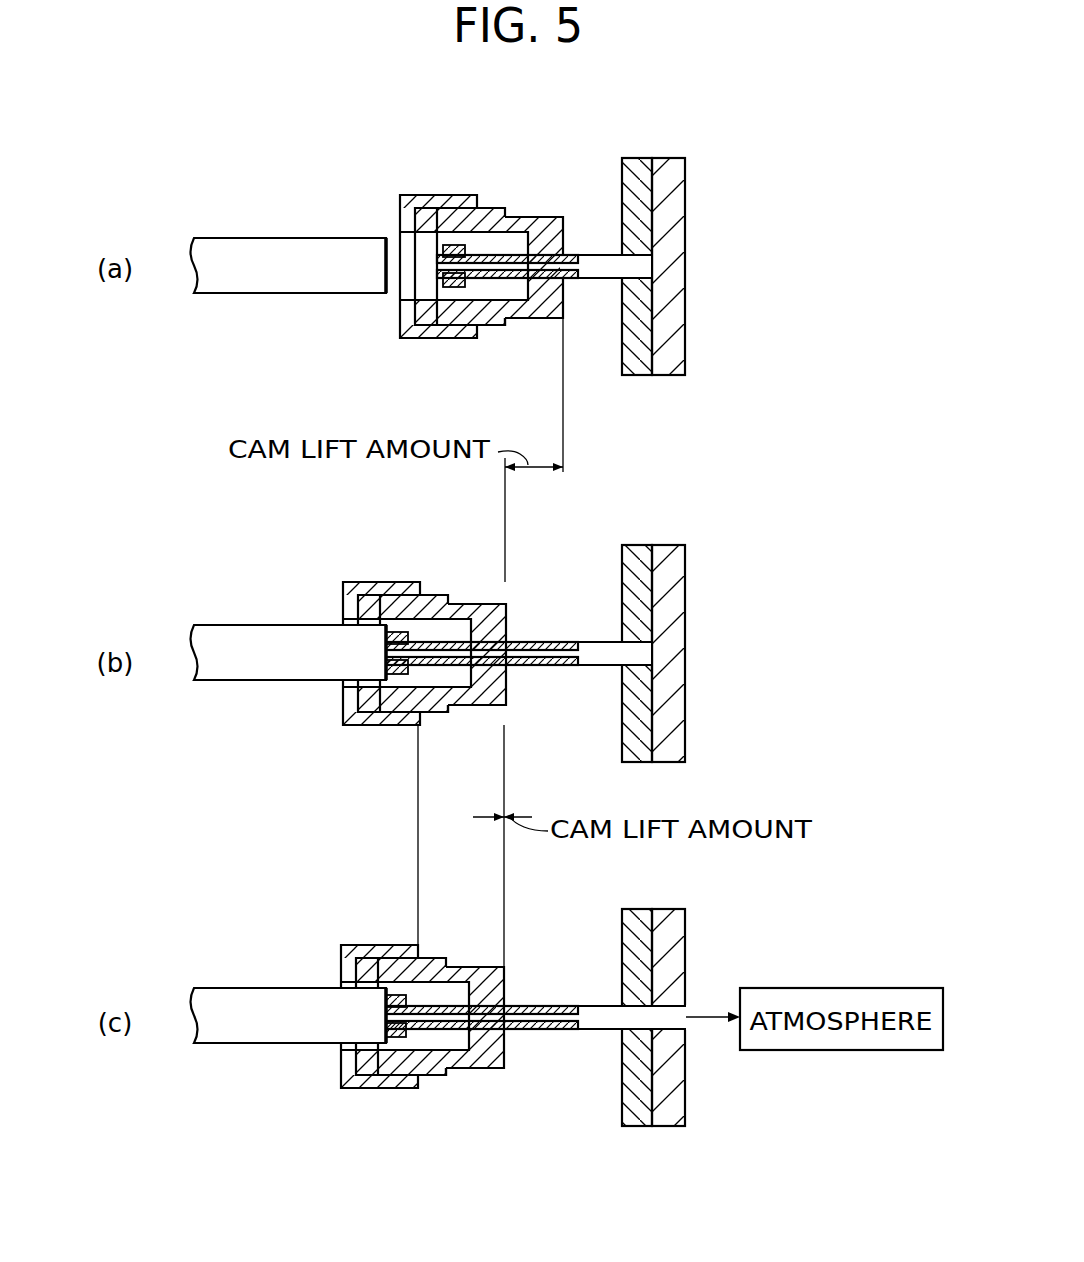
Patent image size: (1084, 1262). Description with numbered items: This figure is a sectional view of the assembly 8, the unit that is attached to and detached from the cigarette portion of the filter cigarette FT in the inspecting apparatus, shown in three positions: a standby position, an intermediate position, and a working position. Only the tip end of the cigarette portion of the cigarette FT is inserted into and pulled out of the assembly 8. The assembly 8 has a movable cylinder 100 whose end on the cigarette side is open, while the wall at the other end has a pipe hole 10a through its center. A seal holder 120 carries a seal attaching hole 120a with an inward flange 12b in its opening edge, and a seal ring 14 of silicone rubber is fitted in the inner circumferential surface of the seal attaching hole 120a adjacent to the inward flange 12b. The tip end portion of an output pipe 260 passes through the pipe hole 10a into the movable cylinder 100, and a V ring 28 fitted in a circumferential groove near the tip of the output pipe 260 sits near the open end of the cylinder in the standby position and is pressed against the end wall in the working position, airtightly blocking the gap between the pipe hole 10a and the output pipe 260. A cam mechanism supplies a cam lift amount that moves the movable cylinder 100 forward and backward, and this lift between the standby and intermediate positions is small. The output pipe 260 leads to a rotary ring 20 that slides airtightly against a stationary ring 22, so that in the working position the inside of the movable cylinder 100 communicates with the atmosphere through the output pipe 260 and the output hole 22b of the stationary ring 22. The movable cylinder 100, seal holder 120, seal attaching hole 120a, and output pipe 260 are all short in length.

The assembly 8 is at (492, 166).
The pipe hole 10a is at (533, 253).
The inward flange 12b is at (400, 310).
The seal ring 14 is at (417, 340).
The rotary ring 20 is at (636, 162).
The stationary ring 22 is at (668, 165).
The output hole 22b is at (671, 1026).
The V ring 28 is at (455, 245).
The movable cylinder 100 is at (540, 320).
The seal holder 120 is at (443, 338).
The seal attaching hole 120a is at (487, 337).
The output pipe 260 is at (597, 265).
The filter cigarette FT is at (248, 248).